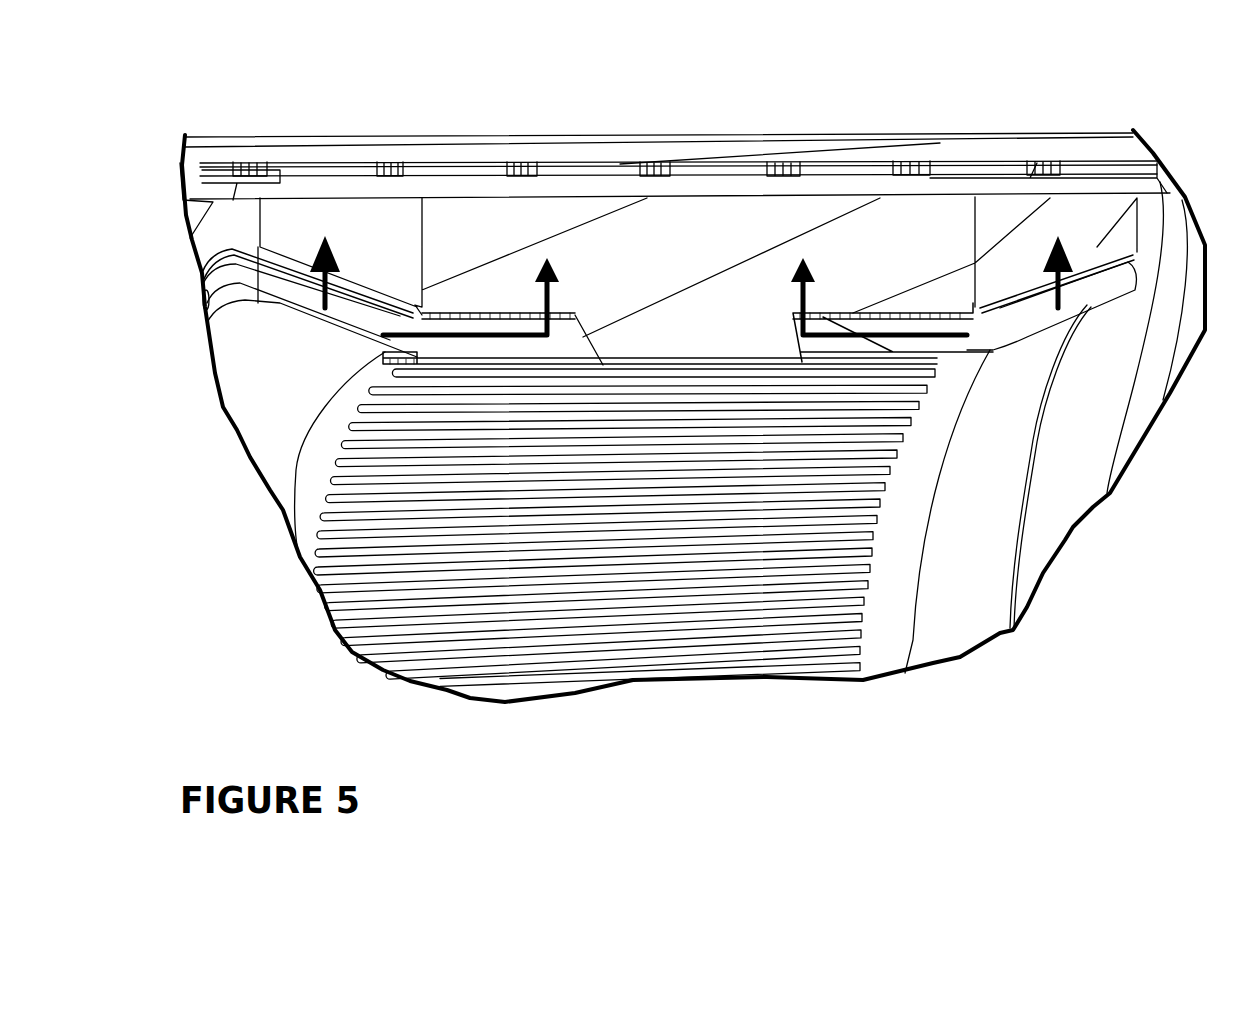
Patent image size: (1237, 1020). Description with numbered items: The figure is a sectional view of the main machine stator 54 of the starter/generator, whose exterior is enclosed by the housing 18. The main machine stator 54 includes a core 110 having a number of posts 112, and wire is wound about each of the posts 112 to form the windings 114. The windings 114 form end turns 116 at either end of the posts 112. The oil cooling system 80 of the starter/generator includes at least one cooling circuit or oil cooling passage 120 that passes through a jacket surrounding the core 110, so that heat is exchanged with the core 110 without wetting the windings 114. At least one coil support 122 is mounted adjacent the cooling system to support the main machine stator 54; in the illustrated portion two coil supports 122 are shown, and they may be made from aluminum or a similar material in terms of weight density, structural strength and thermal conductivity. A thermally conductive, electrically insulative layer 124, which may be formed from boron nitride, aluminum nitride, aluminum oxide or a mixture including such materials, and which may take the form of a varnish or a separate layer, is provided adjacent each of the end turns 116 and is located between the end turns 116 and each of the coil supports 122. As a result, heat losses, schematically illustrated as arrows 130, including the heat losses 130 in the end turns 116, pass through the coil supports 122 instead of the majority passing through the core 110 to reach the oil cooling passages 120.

The housing 18 is at (547, 138).
The main machine stator 54 is at (717, 85).
The oil cooling system 80 is at (258, 168).
The core 110 is at (738, 243).
The posts 112 is at (683, 348).
The windings 114 is at (453, 343).
The end turns 116 is at (285, 253).
The oil cooling passages 120 is at (218, 180).
The coil supports 122 is at (355, 260).
The thermally conductive, electrically insulative layer 124 is at (256, 268).
The heat losses 130 is at (1068, 252).